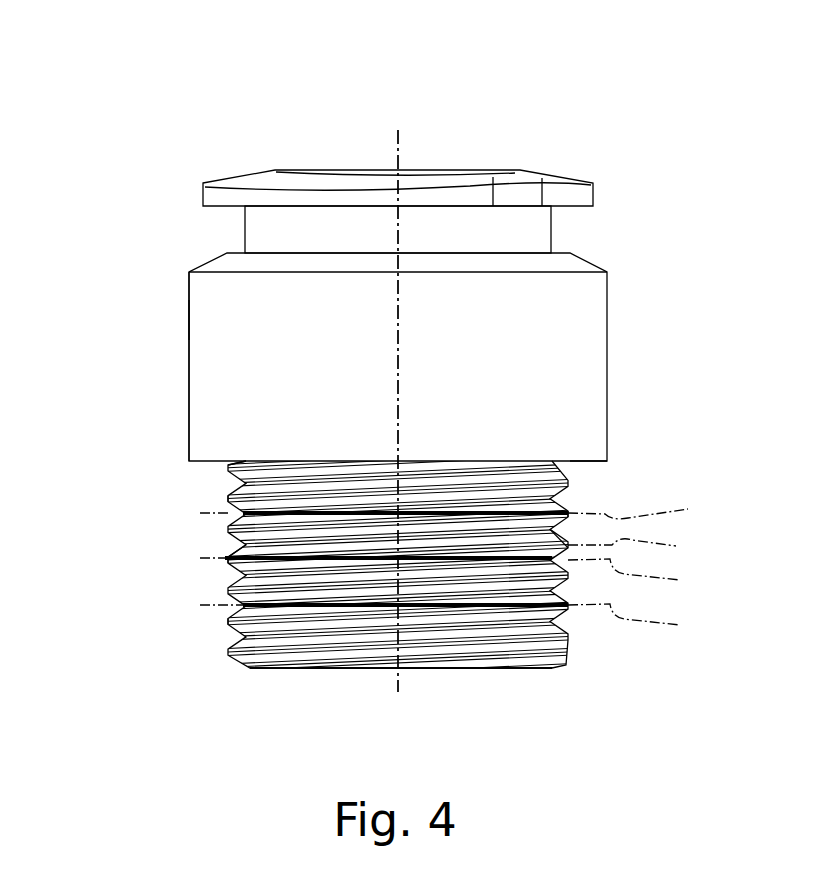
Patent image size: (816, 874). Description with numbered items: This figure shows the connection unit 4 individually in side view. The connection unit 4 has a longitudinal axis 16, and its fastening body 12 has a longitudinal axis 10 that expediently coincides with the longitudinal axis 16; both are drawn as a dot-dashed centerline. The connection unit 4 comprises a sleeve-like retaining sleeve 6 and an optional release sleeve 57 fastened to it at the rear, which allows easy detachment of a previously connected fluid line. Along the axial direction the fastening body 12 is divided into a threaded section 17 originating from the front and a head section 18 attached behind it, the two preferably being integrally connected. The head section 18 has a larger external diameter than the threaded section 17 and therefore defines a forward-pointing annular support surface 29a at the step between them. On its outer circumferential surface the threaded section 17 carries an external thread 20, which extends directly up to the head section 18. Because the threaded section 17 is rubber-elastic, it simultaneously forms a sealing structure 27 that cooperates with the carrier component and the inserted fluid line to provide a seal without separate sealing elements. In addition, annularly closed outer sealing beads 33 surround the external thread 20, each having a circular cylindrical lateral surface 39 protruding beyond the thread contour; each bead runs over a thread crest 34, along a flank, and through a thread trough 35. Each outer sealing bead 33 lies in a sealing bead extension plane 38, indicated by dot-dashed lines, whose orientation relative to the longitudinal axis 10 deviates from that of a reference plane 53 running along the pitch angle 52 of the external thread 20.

The connection unit 4 is at (622, 134).
The release sleeve 57 is at (200, 198).
The retaining sleeve 6 is at (597, 342).
The head section 18 is at (207, 323).
The longitudinal axis 10 is at (398, 337).
The longitudinal axis 16 is at (398, 337).
The fastening body 12 is at (199, 379).
The thread trough 35 is at (242, 492).
The pitch angle 52 is at (505, 560).
The thread crest 34 is at (567, 512).
The annular support surface 29a is at (600, 464).
The circular cylindrical lateral surface 39 is at (237, 509).
The outer sealing bead 33 is at (567, 511).
The sealing bead extension plane 38 is at (460, 568).
The reference plane 53 is at (636, 542).
The threaded section 17 is at (322, 623).
The external thread 20 is at (573, 638).
The sealing structure 27 is at (573, 638).